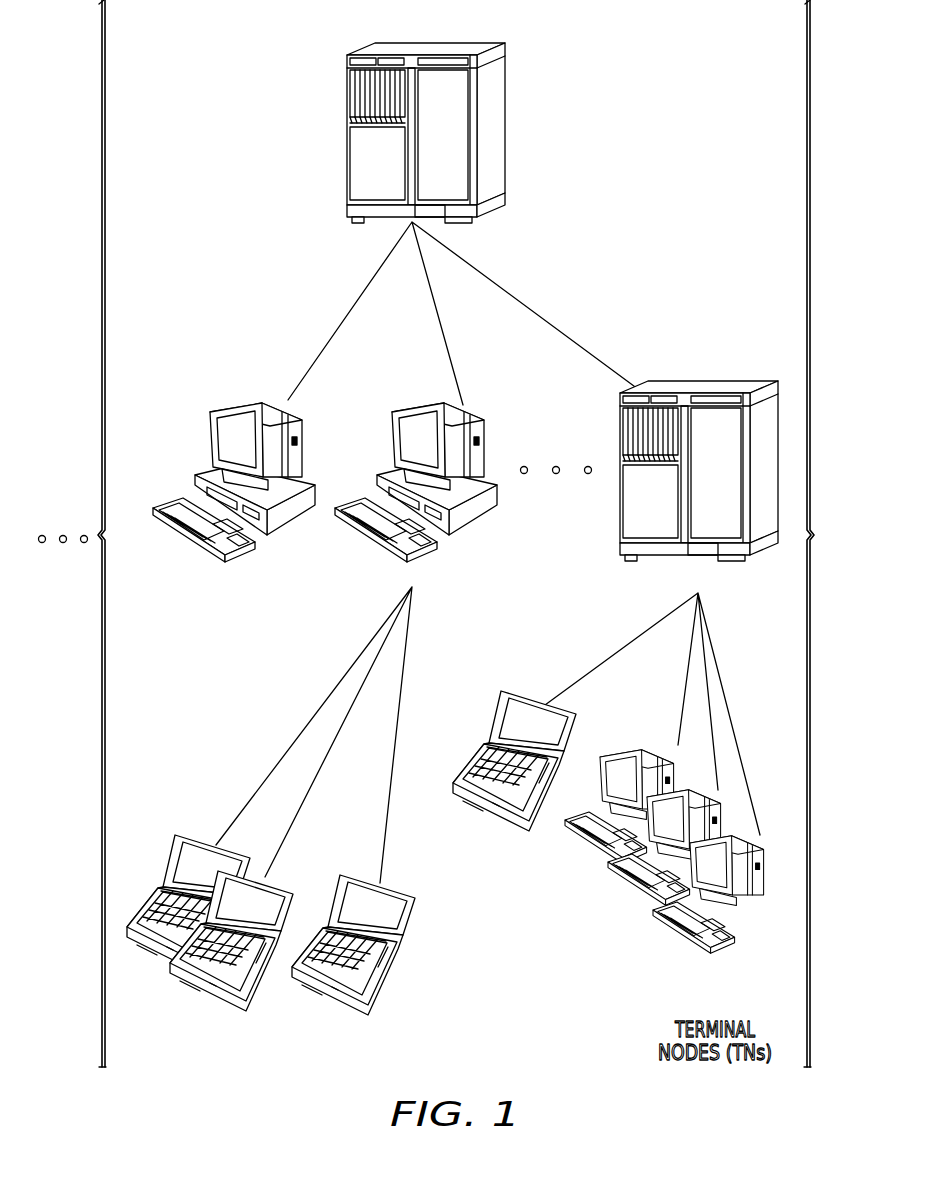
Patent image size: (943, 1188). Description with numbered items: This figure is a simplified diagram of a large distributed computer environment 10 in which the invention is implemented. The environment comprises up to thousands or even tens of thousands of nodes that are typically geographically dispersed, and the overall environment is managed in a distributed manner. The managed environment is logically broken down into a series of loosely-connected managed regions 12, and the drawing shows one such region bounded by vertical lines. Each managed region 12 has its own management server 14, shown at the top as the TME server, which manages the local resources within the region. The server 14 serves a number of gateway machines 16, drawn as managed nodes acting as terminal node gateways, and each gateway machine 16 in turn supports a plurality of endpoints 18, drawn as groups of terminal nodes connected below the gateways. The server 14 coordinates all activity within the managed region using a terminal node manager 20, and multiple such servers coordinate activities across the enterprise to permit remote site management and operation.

The large distributed computer environment 10 is at (213, 746).
The managed region 12 is at (828, 208).
The management server 14 is at (505, 54).
The gateway machine 16 is at (210, 437).
The endpoints 18 is at (426, 835).
The terminal node manager 20 is at (303, 43).